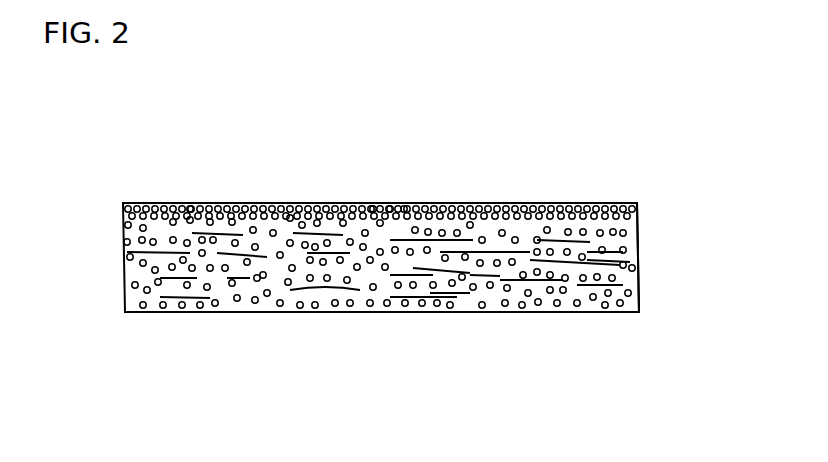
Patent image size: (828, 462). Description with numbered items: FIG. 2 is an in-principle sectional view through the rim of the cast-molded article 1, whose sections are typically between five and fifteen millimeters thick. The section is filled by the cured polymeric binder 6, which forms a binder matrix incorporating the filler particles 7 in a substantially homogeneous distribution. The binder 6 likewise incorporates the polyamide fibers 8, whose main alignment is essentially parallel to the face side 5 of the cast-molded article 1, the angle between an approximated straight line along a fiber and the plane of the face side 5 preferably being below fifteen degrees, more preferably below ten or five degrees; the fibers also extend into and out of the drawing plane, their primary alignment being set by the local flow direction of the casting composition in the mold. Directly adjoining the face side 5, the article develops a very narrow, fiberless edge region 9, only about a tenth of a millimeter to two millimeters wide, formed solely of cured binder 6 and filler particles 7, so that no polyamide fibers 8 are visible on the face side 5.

The cast-molded article 1 is at (525, 180).
The face side 5 is at (272, 203).
The cured polymeric binder 6 is at (633, 248).
The filler particles 7 is at (404, 203).
The polyamide fibers 8 is at (480, 278).
The edge region 9 is at (190, 203).